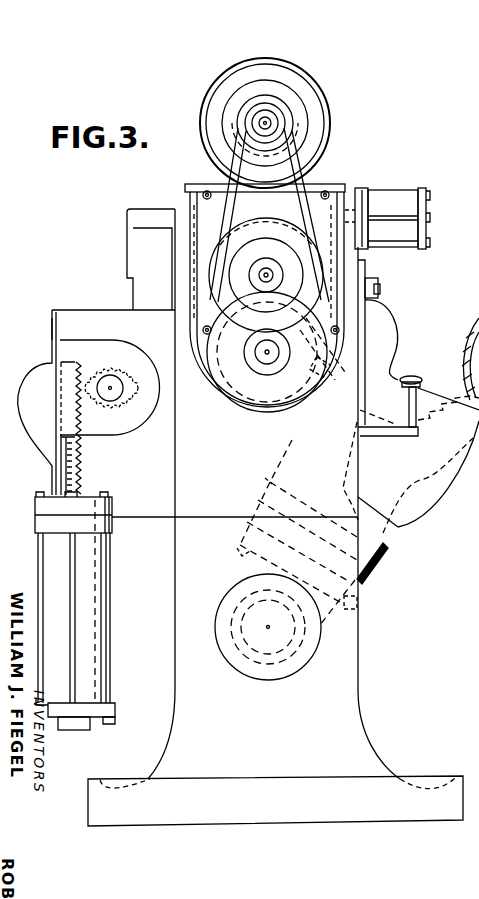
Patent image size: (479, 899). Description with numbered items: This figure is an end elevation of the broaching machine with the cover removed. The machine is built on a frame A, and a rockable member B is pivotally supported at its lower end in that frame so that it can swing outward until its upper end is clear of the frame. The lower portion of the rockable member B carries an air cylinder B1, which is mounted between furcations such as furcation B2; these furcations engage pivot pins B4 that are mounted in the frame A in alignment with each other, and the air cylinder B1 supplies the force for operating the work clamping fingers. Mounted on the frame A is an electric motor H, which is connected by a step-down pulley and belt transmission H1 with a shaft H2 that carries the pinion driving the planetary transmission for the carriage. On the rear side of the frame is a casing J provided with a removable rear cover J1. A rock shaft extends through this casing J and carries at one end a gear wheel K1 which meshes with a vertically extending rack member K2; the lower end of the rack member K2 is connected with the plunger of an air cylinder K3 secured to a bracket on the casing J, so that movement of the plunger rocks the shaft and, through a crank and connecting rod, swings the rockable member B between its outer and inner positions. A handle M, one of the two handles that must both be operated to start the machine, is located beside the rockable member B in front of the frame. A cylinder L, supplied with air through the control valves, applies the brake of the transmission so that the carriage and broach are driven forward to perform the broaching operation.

The frame A is at (352, 650).
The electric motor H is at (325, 106).
The step-down pulley and belt transmission H1 is at (235, 320).
The shaft H2 is at (263, 356).
The cylinder L is at (383, 205).
The casing J is at (78, 320).
The removable rear cover J1 is at (52, 330).
The gear wheel K1 is at (130, 412).
The rack member K2 is at (81, 470).
The air cylinder K3 is at (98, 653).
The handle M is at (413, 372).
The rockable member B is at (392, 534).
The air cylinder B1 is at (368, 580).
The furcation B2 is at (362, 605).
The pivot pins B4 is at (277, 636).